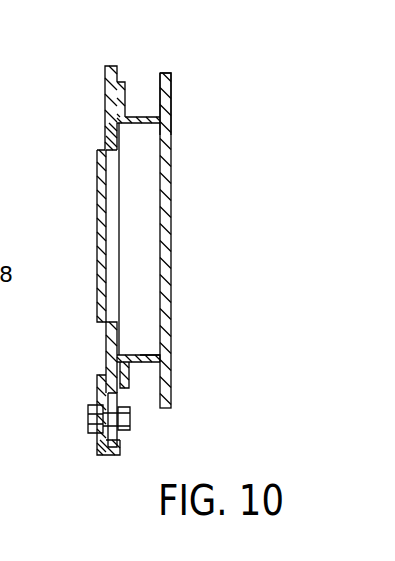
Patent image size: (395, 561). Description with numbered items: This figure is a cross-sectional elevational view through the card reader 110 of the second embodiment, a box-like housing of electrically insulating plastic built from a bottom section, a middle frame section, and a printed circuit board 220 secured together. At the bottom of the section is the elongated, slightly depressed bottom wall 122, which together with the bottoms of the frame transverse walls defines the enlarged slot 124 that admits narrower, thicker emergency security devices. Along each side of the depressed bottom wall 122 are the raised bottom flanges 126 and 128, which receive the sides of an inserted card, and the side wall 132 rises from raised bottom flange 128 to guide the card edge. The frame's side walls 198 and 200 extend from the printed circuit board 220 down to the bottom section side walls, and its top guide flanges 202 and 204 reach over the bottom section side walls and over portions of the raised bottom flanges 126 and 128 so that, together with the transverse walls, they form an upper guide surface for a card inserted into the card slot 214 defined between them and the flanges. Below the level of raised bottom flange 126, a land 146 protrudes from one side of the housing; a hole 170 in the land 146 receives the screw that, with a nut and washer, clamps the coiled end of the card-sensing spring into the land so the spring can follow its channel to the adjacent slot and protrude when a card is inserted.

The card reader 110 is at (82, 292).
The bottom wall 122 is at (97, 225).
The slot 124 is at (97, 183).
The raised bottom flange 126 is at (115, 343).
The raised bottom flange 128 is at (115, 147).
The side wall 132 is at (105, 115).
The land 146 is at (117, 443).
The hole 170 is at (92, 418).
The side wall 198 is at (150, 352).
The side wall 200 is at (145, 131).
The top guide flange 202 is at (128, 383).
The top guide flange 204 is at (128, 88).
The card slot 214 is at (95, 378).
The printed circuit board 220 is at (168, 310).